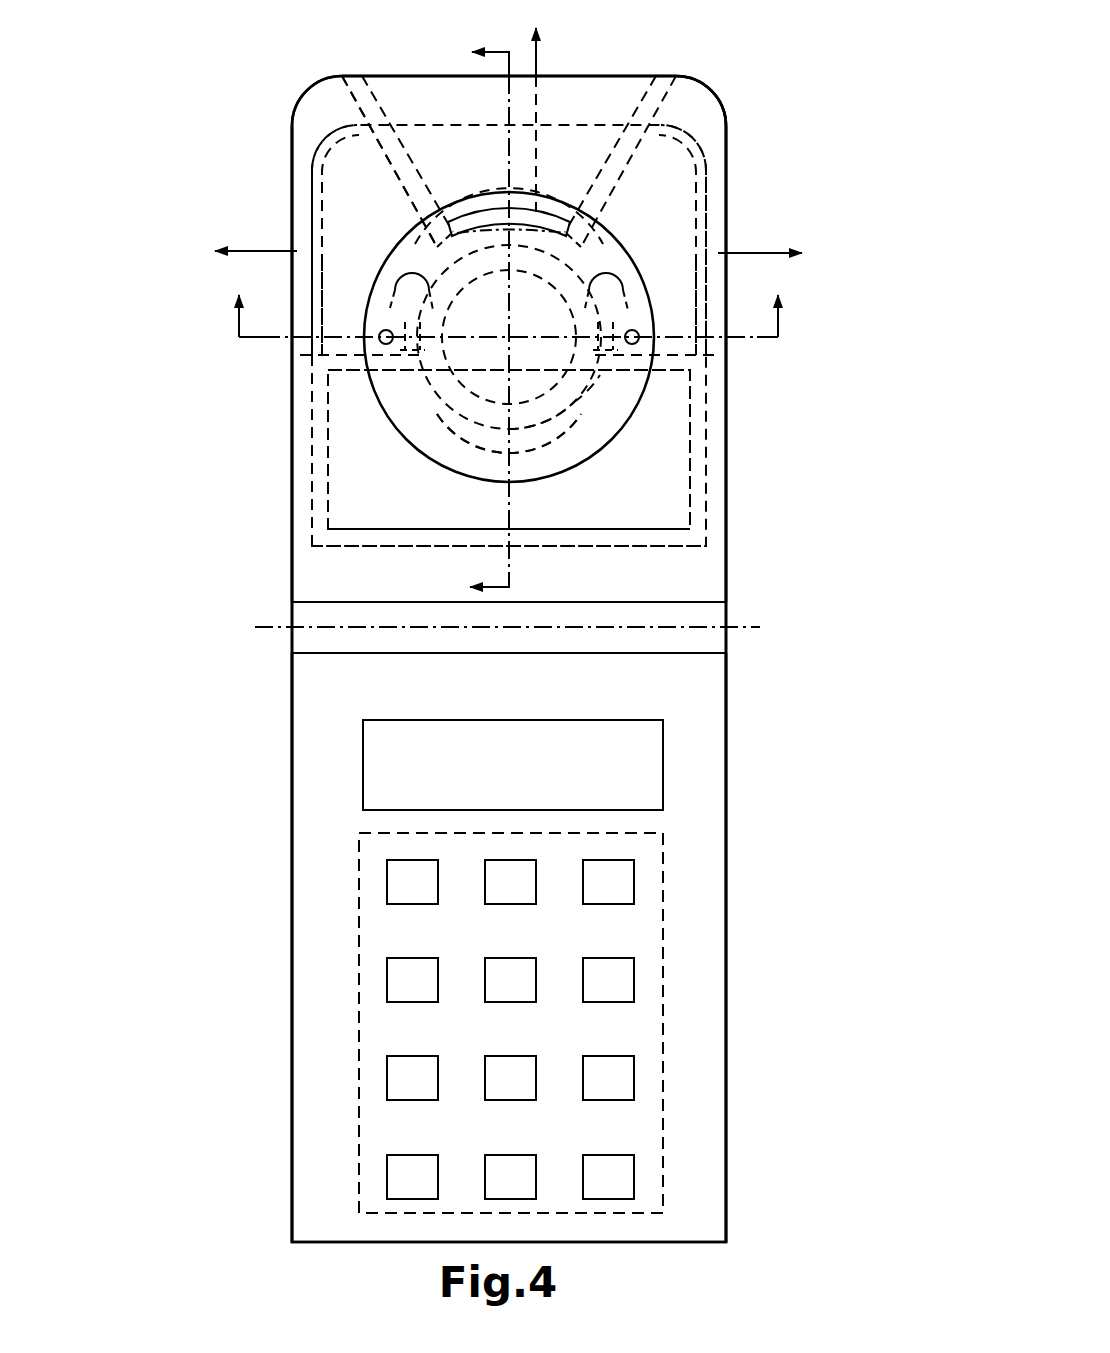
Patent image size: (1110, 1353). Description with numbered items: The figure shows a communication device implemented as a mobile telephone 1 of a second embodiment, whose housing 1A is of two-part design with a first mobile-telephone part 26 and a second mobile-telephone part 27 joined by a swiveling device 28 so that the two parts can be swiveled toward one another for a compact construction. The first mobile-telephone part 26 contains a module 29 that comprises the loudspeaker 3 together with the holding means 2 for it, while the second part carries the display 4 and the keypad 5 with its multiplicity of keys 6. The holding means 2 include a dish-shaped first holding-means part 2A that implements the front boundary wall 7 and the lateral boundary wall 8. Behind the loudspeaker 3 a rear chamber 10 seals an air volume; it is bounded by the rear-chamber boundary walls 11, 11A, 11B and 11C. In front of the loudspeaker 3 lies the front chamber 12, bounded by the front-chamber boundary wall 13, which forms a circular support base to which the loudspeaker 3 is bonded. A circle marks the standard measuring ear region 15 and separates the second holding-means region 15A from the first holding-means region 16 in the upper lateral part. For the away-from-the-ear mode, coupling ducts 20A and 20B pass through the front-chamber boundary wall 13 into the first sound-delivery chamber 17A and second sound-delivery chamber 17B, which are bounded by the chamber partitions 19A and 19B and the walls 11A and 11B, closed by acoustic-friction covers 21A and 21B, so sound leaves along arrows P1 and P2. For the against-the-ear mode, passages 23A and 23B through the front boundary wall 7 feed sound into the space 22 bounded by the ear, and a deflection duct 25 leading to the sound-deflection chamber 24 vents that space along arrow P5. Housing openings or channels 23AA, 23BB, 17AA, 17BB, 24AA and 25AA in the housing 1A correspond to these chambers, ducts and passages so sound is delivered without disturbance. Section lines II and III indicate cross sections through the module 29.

The mobile telephone 1 is at (788, 803).
The housing 1A is at (727, 860).
The holding means 2 is at (614, 120).
The first holding-means part 2A is at (690, 80).
The loudspeaker 3 is at (473, 415).
The display 4 is at (620, 767).
The keypad 5 is at (352, 856).
The keys 6 is at (510, 880).
The front boundary wall 7 is at (705, 572).
The lateral boundary wall 8 is at (285, 533).
The rear chamber 10 is at (358, 497).
The rear-chamber boundary wall 11 is at (472, 205).
The rear-chamber boundary wall 11A is at (348, 363).
The rear-chamber boundary wall 11B is at (690, 373).
The rear-chamber boundary wall 11C is at (433, 530).
The front chamber 12 is at (478, 365).
The front-chamber boundary wall 13 is at (533, 268).
The standard measuring ear region 15 is at (619, 444).
The second holding-means region 15A is at (610, 415).
The first holding-means region 16 is at (322, 128).
The first sound-delivery chamber 17A is at (352, 212).
The housing opening 17AA is at (230, 117).
The second sound-delivery chamber 17B is at (680, 238).
The housing opening 17BB is at (776, 127).
The first chamber partition 19A is at (413, 183).
The second chamber partition 19B is at (617, 190).
The first coupling duct 20A is at (430, 329).
The second coupling duct 20B is at (588, 329).
The cover 21A is at (330, 245).
The cover 21B is at (680, 235).
The space bounded by the ear 22 is at (440, 423).
The first passage 23A is at (380, 336).
The housing opening 23AA is at (380, 338).
The second passage 23B is at (640, 336).
The housing opening 23BB is at (640, 340).
The sound-deflection chamber 24 is at (468, 152).
The housing opening 24AA is at (400, 55).
The deflection duct 25 is at (565, 215).
The housing opening 25AA is at (600, 116).
The first mobile-telephone part 26 is at (228, 68).
The second mobile-telephone part 27 is at (243, 712).
The swiveling device 28 is at (748, 606).
The module 29 is at (605, 550).
The arrow P1 is at (245, 251).
The arrow P2 is at (780, 253).
The arrow P5 is at (540, 64).
The section line II is at (237, 333).
The section line III is at (509, 52).